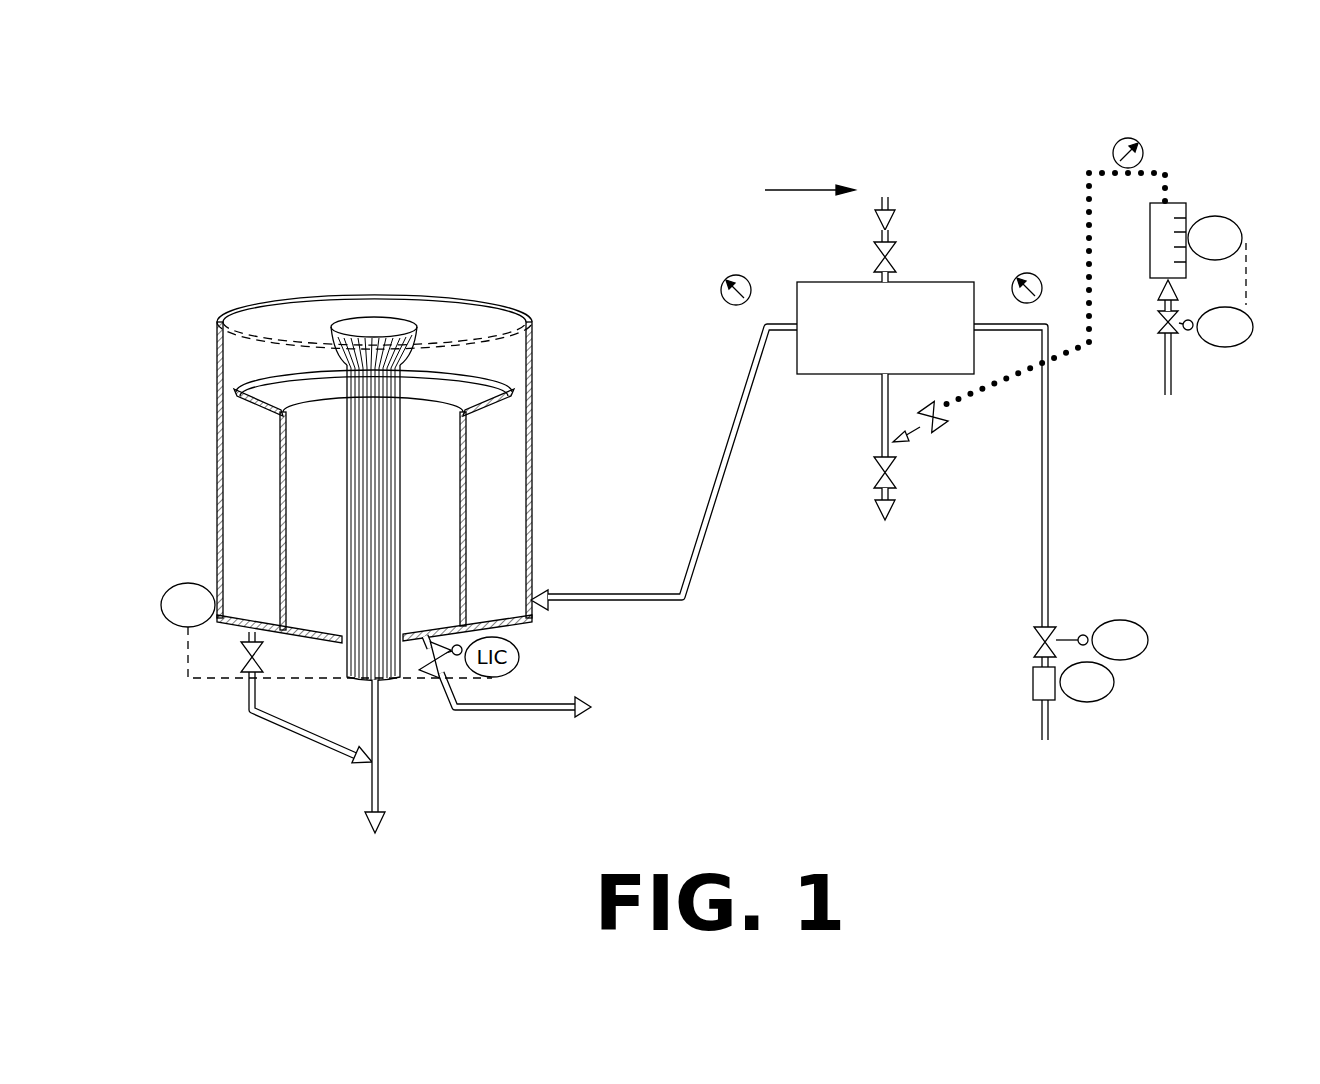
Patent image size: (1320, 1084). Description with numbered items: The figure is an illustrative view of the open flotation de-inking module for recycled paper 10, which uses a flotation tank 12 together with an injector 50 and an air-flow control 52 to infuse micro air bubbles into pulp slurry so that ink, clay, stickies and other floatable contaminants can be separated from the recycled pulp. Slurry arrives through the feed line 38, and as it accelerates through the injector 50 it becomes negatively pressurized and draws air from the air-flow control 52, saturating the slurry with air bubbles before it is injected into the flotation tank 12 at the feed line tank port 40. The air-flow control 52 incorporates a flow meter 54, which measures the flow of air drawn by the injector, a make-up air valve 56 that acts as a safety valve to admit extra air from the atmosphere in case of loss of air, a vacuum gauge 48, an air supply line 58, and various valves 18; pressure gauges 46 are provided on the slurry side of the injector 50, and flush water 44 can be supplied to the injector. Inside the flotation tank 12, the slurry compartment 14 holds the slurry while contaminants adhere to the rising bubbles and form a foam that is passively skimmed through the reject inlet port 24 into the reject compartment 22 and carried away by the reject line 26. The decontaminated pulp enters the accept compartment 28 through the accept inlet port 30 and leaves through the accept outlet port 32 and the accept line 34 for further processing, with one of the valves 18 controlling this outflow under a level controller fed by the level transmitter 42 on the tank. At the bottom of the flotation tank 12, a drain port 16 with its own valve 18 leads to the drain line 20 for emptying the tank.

The open flotation de-inking module for recycled paper 10 is at (578, 192).
The flotation tank 12 is at (530, 383).
The slurry compartment 14 is at (517, 500).
The drain port 16 is at (250, 632).
The valve 18 is at (243, 665).
The drain line 20 is at (340, 752).
The reject compartment 22 is at (380, 331).
The reject inlet port 24 is at (380, 330).
The reject line 26 is at (381, 793).
The accept compartment 28 is at (337, 509).
The accept inlet port 30 is at (293, 378).
The accept outlet port 32 is at (421, 630).
The accept line 34 is at (518, 715).
The feed line 38 is at (715, 485).
The feed line tank port 40 is at (533, 598).
The level transmitter 42 is at (172, 590).
The flush water 44 is at (698, 185).
The pressure gauge 46 is at (752, 280).
The vacuum gauge 48 is at (1123, 138).
The injector 50 is at (903, 340).
The air-flow control 52 is at (947, 210).
The flow meter 54 is at (1207, 217).
The make-up air valve 56 is at (1157, 333).
The air supply line 58 is at (1088, 199).